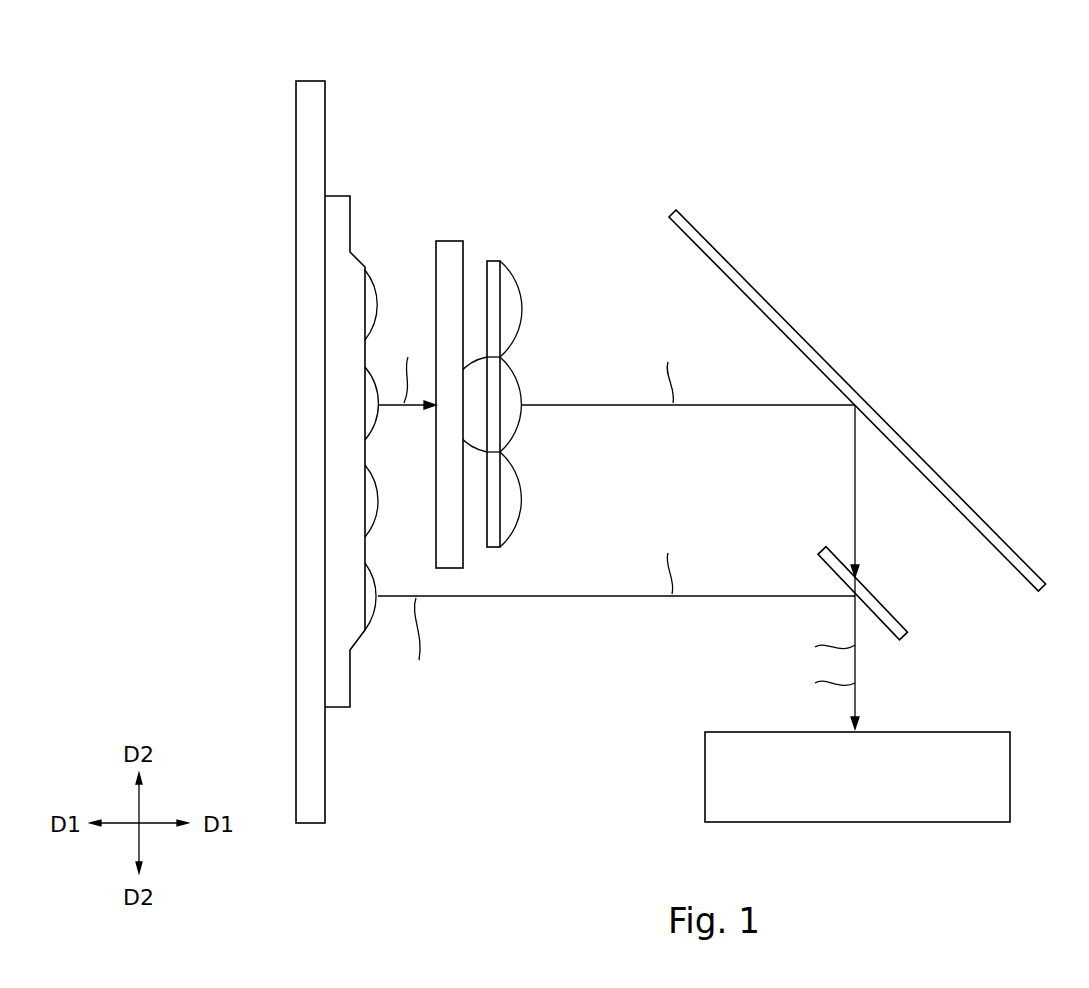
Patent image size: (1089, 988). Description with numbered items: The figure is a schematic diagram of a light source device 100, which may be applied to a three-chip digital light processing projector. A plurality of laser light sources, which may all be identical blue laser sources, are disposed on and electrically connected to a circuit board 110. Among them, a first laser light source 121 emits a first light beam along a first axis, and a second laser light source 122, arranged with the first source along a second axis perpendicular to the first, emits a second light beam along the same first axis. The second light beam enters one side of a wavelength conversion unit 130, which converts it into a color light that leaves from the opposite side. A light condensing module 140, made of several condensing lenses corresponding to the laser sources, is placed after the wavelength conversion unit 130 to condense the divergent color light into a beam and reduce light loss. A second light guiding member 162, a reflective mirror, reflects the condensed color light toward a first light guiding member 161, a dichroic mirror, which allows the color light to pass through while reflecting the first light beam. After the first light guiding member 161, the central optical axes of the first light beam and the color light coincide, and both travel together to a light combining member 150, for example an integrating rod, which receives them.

The light source device 100 is at (193, 48).
The circuit board 110 is at (311, 80).
The first laser light source 121 is at (378, 615).
The second laser light source 122 is at (373, 383).
The wavelength conversion unit 130 is at (440, 240).
The light condensing module 140 is at (494, 260).
The light combining member 150 is at (705, 781).
The first light guiding member 161 is at (880, 603).
The second light guiding member 162 is at (968, 502).